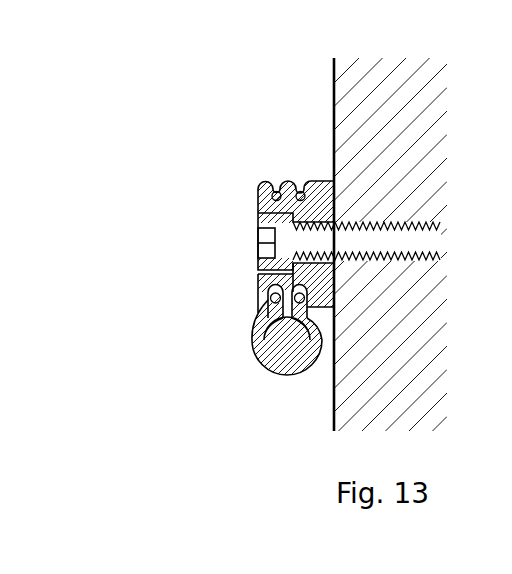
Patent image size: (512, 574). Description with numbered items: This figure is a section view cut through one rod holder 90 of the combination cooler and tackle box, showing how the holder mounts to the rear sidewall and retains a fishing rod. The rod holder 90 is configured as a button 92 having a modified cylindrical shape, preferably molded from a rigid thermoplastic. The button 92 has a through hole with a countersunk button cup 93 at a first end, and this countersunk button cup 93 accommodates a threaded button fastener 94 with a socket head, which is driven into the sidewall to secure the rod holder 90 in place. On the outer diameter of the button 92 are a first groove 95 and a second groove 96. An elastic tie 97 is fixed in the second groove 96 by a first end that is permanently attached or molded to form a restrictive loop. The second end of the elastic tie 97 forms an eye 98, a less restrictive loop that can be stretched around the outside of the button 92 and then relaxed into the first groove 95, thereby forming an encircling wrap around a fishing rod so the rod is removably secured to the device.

The rod holder 90 is at (155, 124).
The button 92 is at (323, 178).
The countersunk button cup 93 is at (257, 214).
The button fastener 94 is at (258, 265).
The first groove 95 is at (274, 184).
The second groove 96 is at (298, 182).
The elastic tie 97 is at (258, 352).
The eye 98 is at (262, 297).